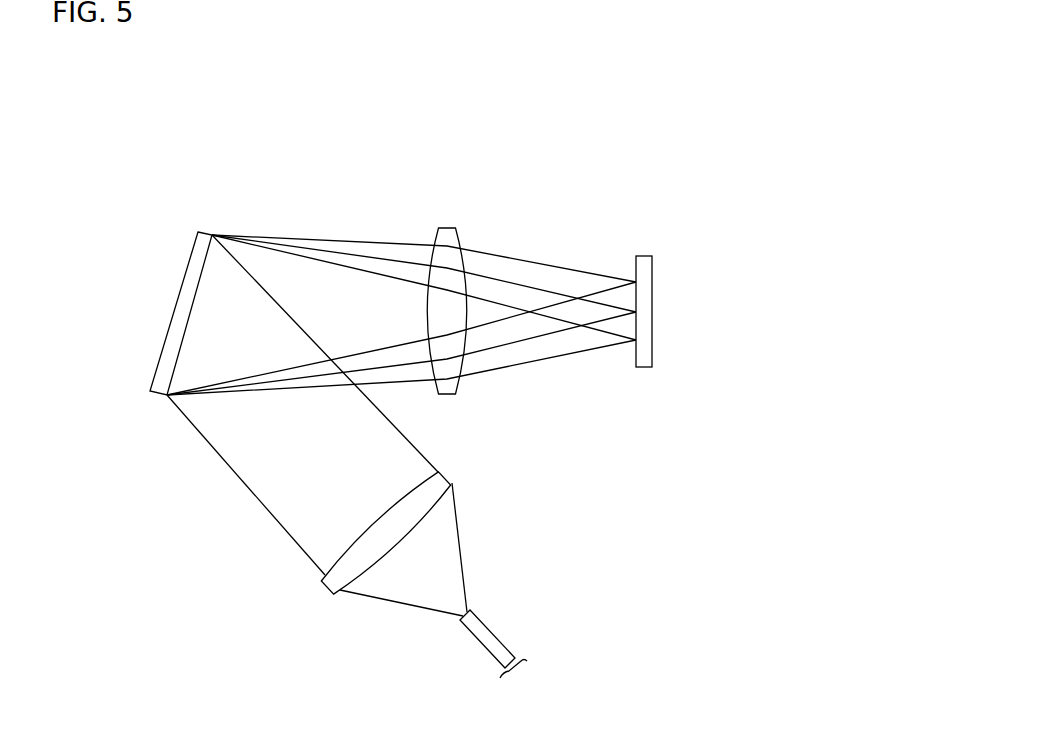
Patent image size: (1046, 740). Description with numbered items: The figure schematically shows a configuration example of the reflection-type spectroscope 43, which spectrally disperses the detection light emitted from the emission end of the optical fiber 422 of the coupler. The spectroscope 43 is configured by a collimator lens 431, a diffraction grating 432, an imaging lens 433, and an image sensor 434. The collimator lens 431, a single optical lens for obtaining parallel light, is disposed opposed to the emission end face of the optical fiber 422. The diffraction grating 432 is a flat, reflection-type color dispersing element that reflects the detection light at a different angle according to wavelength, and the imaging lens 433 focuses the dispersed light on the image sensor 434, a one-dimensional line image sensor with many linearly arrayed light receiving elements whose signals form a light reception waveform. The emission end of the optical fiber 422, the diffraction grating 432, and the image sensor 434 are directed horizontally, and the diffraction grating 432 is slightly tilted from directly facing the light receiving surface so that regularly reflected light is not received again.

The spectroscope 43 is at (733, 62).
The collimator lens 431 is at (453, 475).
The diffraction grating 432 is at (200, 233).
The imaging lens 433 is at (447, 228).
The image sensor 434 is at (646, 256).
The optical fiber 422 is at (487, 628).